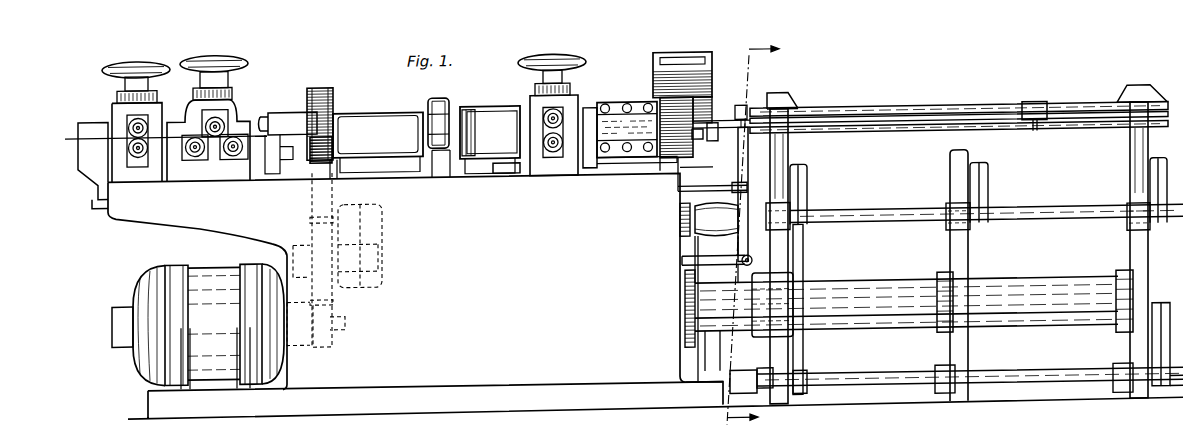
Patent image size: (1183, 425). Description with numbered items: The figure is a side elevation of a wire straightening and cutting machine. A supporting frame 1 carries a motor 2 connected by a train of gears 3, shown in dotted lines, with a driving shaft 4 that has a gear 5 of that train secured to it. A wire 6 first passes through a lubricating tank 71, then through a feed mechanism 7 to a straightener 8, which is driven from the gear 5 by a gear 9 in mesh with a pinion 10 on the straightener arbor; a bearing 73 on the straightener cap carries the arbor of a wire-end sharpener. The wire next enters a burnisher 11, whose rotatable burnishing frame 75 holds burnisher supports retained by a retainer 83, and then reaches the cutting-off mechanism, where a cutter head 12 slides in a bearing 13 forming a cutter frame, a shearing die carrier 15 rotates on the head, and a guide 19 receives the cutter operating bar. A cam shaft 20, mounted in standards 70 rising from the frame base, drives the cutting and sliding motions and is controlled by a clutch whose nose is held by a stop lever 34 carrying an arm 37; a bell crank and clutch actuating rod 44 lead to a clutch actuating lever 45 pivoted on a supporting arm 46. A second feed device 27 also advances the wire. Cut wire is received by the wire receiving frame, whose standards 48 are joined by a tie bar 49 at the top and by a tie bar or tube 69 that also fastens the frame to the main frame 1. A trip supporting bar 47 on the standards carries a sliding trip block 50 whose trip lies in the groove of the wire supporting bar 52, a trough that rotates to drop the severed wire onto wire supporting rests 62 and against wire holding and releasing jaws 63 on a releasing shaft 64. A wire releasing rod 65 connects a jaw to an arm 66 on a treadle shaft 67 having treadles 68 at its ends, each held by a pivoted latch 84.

The supporting frame 1 is at (508, 267).
The motor 2 is at (133, 358).
The train of gears 3 is at (334, 260).
The driving shaft 4 is at (452, 173).
The gear 5 is at (298, 199).
The wire 6 is at (80, 129).
The feed mechanism 7 is at (176, 118).
The straightener 8 is at (399, 122).
The gear 9 is at (331, 106).
The pinion 10 is at (326, 158).
The burnisher 11 is at (490, 129).
The cutter head 12 is at (590, 106).
The bearing 13 is at (628, 112).
The shearing die carrier 15 is at (699, 140).
The guide 19 is at (709, 70).
The cam shaft 20 is at (680, 218).
The feed device 27 is at (548, 115).
The stop lever 34 is at (1035, 134).
The arm 37 is at (716, 141).
The clutch actuating rod 44 is at (703, 175).
The clutch actuating lever 45 is at (748, 172).
The supporting arm 46 is at (682, 261).
The trip supporting bar 47 is at (958, 119).
The standards 48 is at (790, 154).
The tie bar 49 is at (959, 100).
The trip block 50 is at (1034, 107).
The wire supporting bar 52 is at (900, 134).
The wire supporting rests 62 is at (950, 193).
The wire holding and releasing jaws 63 is at (807, 199).
The releasing shaft 64 is at (974, 220).
The wire releasing rod 65 is at (803, 266).
The arm 66 is at (807, 377).
The treadle shaft 67 is at (885, 362).
The treadles 68 is at (730, 390).
The tie bar or tube 69 is at (1040, 291).
The standards 70 is at (708, 357).
The tank 71 is at (92, 152).
The bearing 73 is at (282, 105).
The burnishing frame 75 is at (472, 100).
The retainer 83 is at (510, 170).
The latch 84 is at (1152, 352).